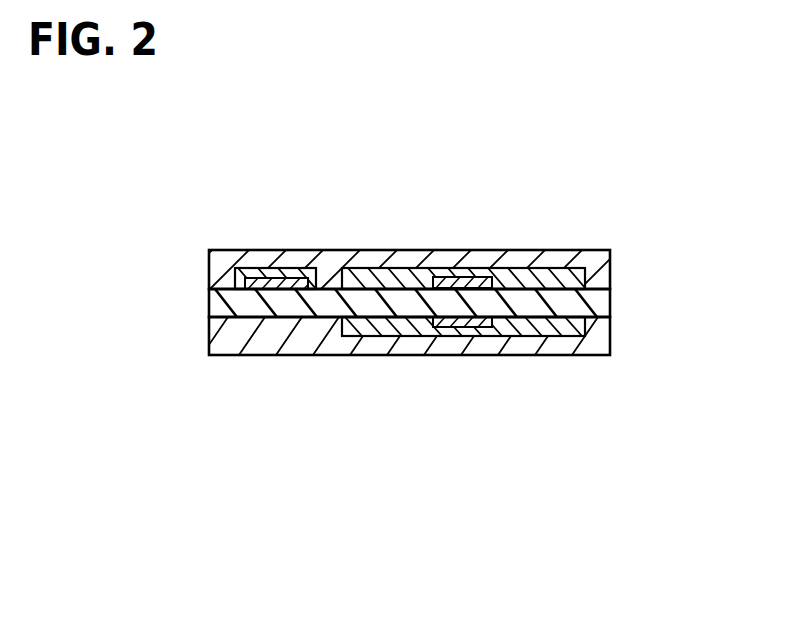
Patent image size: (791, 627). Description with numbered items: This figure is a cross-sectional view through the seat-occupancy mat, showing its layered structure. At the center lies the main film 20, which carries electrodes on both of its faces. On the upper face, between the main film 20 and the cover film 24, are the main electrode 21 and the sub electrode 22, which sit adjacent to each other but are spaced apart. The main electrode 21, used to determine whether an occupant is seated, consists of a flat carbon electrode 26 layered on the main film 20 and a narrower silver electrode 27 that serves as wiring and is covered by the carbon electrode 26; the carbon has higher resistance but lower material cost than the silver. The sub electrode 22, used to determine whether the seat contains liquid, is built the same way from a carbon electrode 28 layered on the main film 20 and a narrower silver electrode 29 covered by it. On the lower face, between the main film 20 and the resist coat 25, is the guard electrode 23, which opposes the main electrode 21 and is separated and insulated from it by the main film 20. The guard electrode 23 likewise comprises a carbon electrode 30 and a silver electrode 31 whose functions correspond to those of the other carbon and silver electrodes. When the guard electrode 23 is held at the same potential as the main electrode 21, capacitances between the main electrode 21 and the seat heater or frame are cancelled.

The main film 20 is at (600, 303).
The main electrode 21 is at (538, 264).
The sub electrode 22 is at (238, 270).
The guard electrode 23 is at (560, 337).
The cover film 24 is at (601, 266).
The resist coat 25 is at (601, 342).
The carbon electrode 26 is at (380, 280).
The silver electrode 27 is at (468, 278).
The carbon electrode 28 is at (309, 268).
The silver electrode 29 is at (272, 278).
The carbon electrode 30 is at (375, 338).
The silver electrode 31 is at (483, 327).